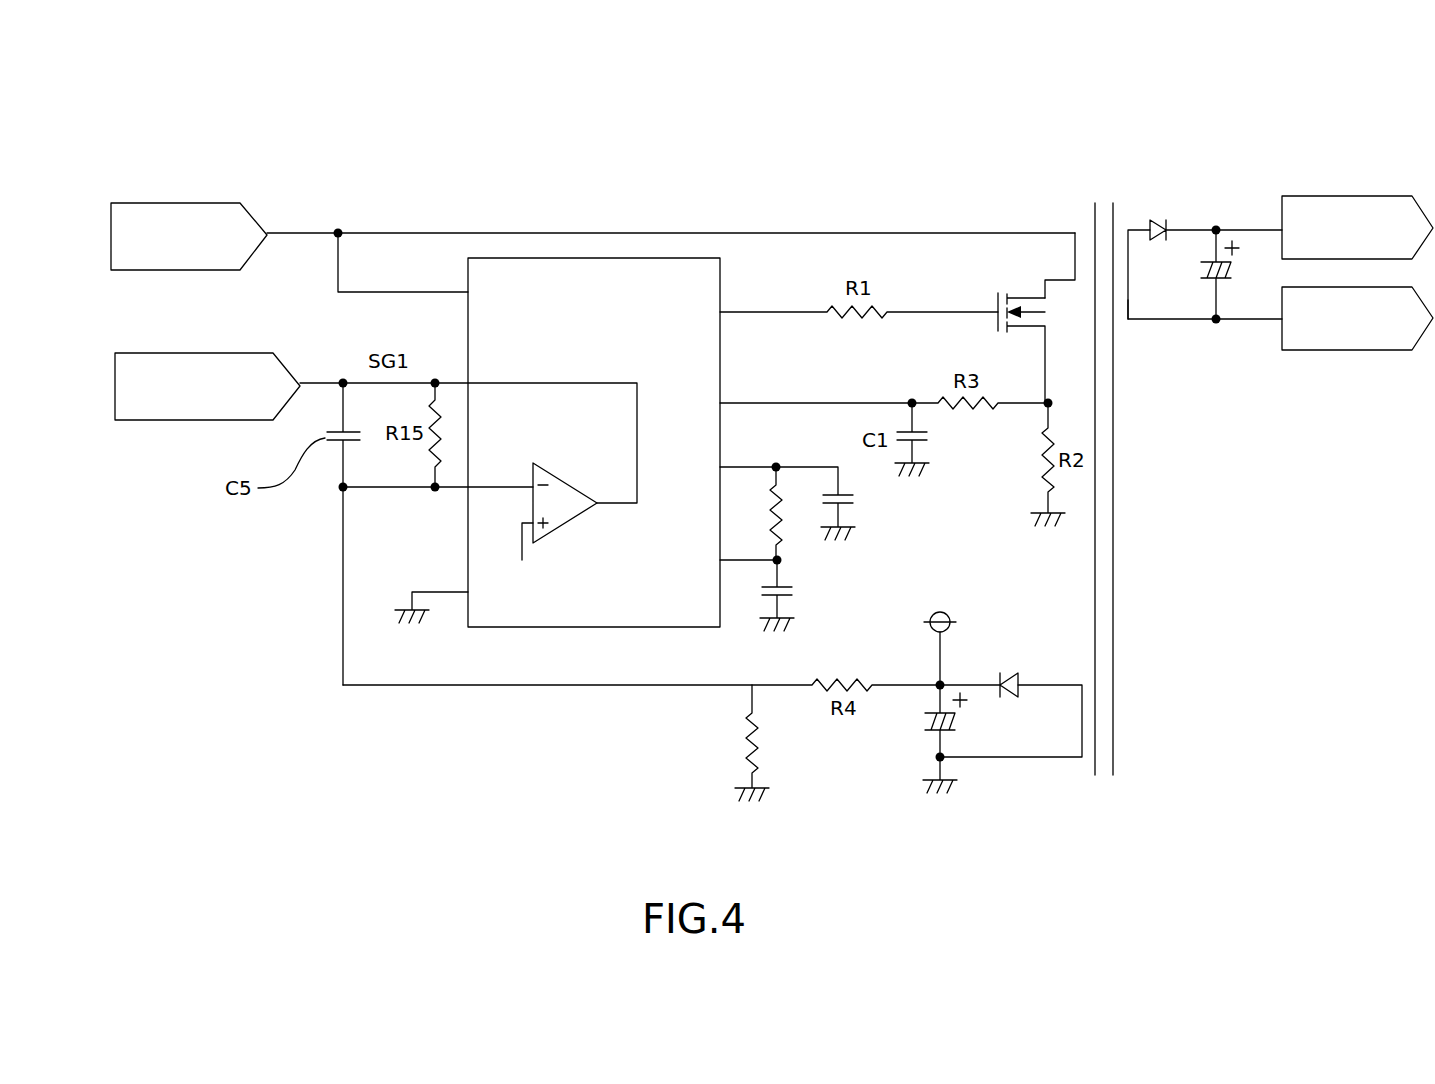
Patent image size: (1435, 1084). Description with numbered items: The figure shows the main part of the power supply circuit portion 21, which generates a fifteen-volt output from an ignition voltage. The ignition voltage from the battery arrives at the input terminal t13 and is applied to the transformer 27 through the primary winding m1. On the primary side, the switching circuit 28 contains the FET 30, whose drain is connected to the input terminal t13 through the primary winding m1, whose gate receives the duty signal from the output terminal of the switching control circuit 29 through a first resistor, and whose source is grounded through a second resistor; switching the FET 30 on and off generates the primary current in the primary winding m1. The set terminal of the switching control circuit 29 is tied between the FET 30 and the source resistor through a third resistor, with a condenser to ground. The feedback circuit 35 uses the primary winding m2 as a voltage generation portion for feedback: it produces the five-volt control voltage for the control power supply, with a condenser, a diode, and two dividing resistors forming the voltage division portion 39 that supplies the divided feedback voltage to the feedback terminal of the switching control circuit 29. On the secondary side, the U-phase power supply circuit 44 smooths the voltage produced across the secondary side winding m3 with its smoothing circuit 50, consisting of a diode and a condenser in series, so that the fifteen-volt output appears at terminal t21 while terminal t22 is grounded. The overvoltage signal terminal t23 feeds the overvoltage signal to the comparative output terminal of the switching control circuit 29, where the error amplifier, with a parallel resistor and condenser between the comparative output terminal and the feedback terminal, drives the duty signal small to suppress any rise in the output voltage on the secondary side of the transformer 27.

The power supply circuit portion 21 is at (1122, 186).
The transformer 27 is at (1100, 203).
The switching circuit 28 is at (922, 238).
The switching control circuit 29 is at (625, 256).
The FET 30 is at (998, 297).
The feedback circuit 35 is at (898, 787).
The voltage division portion 39 is at (776, 752).
The U-phase power supply circuit 44 is at (1298, 179).
The smoothing circuit 50 is at (1196, 336).
The input terminal t13 is at (197, 203).
The terminal t21 is at (1378, 196).
The terminal t22 is at (1385, 350).
The overvoltage signal terminal t23 is at (180, 420).
The primary winding m1 is at (1075, 255).
The primary winding m2 is at (1082, 710).
The secondary side winding m3 is at (1128, 300).